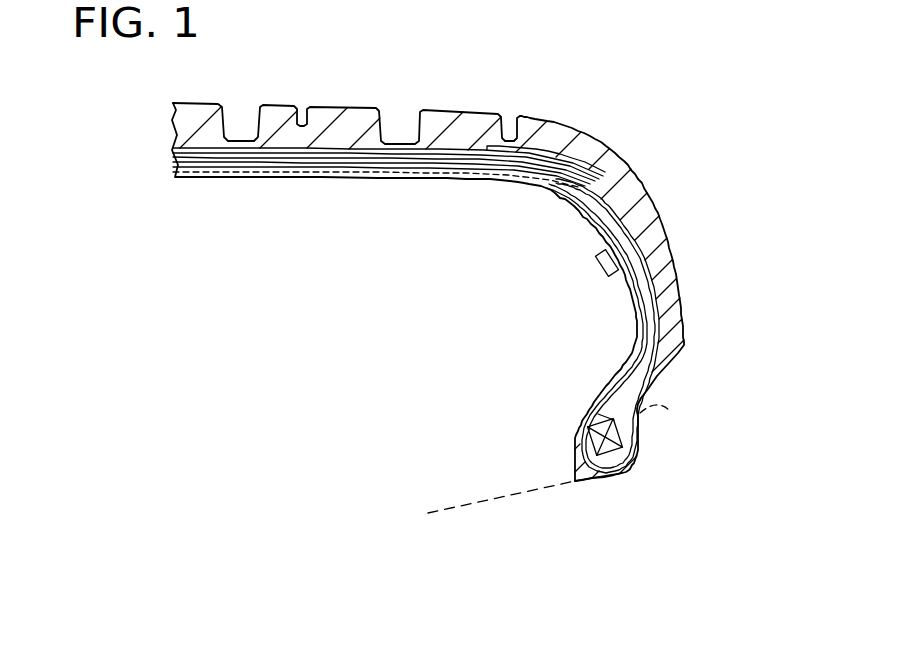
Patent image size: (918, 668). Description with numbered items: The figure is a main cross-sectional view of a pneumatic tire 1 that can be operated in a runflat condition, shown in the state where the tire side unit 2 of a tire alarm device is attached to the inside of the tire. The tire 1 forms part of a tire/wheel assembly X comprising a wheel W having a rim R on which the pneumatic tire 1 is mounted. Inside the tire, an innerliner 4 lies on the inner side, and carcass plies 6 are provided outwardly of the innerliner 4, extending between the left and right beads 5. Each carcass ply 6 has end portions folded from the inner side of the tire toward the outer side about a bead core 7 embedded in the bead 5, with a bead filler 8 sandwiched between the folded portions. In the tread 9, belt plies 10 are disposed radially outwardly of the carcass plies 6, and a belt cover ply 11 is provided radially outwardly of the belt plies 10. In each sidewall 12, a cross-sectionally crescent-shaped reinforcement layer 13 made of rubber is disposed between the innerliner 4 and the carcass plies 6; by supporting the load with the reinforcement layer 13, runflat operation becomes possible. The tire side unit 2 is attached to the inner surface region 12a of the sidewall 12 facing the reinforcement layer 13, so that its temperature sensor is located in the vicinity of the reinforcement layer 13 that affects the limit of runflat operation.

The pneumatic tire 1 is at (603, 131).
The tire side unit 2 is at (602, 279).
The innerliner 4 is at (550, 187).
The bead 5 is at (614, 479).
The carcass ply 6 is at (659, 262).
The bead core 7 is at (583, 443).
The bead filler 8 is at (591, 405).
The tread 9 is at (492, 107).
The belt ply 10 is at (378, 165).
The belt cover ply 11 is at (453, 114).
The sidewall 12 is at (676, 281).
The inner surface region 12a is at (597, 253).
The reinforcement layer 13 is at (653, 223).
The tire/wheel assembly X is at (684, 317).
The rim R is at (543, 490).
The wheel W is at (462, 512).